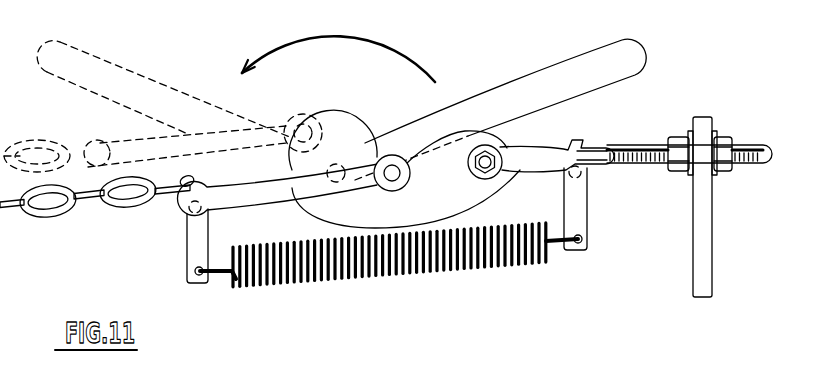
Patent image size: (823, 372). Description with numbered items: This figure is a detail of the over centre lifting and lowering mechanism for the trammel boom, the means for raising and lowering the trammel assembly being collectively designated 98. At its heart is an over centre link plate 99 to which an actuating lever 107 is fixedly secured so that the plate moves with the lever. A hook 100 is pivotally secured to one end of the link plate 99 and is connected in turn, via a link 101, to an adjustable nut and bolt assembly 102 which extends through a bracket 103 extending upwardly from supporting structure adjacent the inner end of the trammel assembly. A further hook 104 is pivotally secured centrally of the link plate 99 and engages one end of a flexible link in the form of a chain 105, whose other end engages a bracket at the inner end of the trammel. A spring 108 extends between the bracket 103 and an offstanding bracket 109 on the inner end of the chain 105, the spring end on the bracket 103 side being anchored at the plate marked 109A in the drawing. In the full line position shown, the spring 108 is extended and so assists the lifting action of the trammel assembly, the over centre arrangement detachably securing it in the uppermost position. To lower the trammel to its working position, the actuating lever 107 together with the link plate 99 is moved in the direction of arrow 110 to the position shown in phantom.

The over centre arrangement 98 is at (438, 82).
The over centre link plate 99 is at (343, 138).
The hook 100 is at (530, 162).
The link 101 is at (590, 150).
The adjustable nut and bolt assembly 102 is at (770, 124).
The bracket 103 is at (705, 207).
The further hook 104 is at (125, 147).
The chain 105 is at (101, 207).
The actuating lever 107 is at (172, 97).
The spring 108 is at (388, 274).
The offstanding bracket 109 is at (192, 268).
The spring anchor bracket 109A is at (594, 198).
The arrow 110 is at (349, 39).